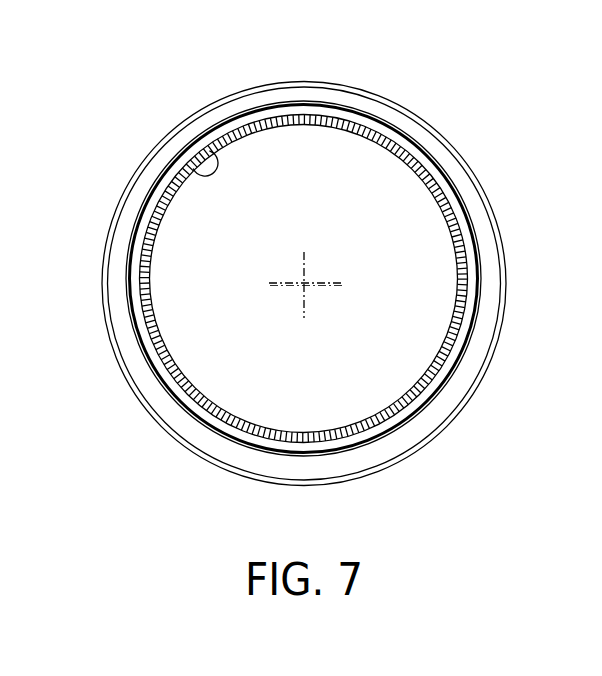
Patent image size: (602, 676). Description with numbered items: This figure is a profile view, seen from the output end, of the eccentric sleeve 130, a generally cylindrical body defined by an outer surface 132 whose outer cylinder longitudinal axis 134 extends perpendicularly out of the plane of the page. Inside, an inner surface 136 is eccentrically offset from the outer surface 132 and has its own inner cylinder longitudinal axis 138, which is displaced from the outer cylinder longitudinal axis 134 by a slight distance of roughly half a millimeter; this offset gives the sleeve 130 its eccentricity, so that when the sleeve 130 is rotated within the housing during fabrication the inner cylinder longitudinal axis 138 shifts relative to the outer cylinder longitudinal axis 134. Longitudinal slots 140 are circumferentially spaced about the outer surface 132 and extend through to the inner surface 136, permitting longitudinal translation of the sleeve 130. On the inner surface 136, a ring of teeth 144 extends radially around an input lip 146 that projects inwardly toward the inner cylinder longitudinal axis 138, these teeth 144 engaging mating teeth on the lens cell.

The eccentric sleeve 130 is at (286, 277).
The outer surface 132 is at (423, 124).
The outer cylinder longitudinal axis 134 is at (304, 285).
The inner surface 136 is at (335, 104).
The inner cylinder longitudinal axis 138 is at (304, 283).
The longitudinal slots 140 is at (25, 519).
The teeth 144 is at (154, 218).
The input lip 146 is at (208, 150).